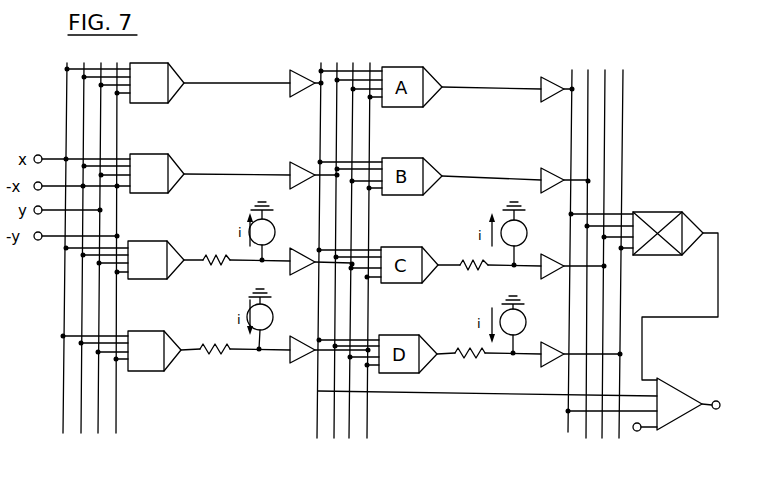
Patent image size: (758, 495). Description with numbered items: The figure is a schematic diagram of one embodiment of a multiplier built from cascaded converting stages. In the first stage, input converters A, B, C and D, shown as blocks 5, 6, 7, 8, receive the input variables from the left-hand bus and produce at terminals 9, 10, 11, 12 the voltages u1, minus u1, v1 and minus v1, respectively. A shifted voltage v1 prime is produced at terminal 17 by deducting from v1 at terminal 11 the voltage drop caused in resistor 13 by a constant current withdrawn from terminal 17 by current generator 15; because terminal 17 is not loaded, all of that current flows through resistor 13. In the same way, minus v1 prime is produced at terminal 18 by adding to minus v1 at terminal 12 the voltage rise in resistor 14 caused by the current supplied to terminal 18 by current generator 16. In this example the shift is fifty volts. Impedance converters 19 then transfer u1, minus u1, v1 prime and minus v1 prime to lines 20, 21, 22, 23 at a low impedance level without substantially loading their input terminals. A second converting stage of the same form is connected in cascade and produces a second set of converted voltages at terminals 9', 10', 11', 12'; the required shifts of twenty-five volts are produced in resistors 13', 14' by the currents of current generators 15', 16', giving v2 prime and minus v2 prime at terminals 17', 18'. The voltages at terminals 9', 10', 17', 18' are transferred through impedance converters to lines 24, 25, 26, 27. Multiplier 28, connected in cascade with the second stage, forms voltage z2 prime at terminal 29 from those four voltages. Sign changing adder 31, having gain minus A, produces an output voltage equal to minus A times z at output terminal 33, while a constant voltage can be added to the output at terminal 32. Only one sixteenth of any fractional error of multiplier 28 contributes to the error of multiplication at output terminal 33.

The input converter A 5 is at (170, 75).
The input converter B 6 is at (170, 166).
The input converter C 7 is at (169, 253).
The input converter D 8 is at (168, 342).
The terminal 9 is at (237, 72).
The terminal 10 is at (237, 164).
The terminal 11 is at (197, 247).
The terminal 12 is at (194, 332).
The resistor 13 is at (216, 269).
The resistor 14 is at (215, 358).
The current generator 15 is at (273, 231).
The current generator 16 is at (272, 319).
The terminal 17 is at (260, 269).
The terminal 18 is at (260, 358).
The impedance converters 19 is at (292, 76).
The line 20 is at (305, 250).
The line 21 is at (333, 440).
The line 22 is at (348, 440).
The line 23 is at (378, 250).
The terminal 9' is at (491, 77).
The terminal 10' is at (491, 167).
The terminal 11' is at (451, 253).
The terminal 12' is at (448, 336).
The resistor 13' is at (474, 275).
The resistor 14' is at (470, 362).
The current generator 15' is at (514, 233).
The current generator 16' is at (513, 324).
The terminal 17' is at (514, 277).
The terminal 18' is at (513, 363).
The line 24 is at (562, 256).
The line 25 is at (586, 440).
The line 26 is at (602, 440).
The line 27 is at (628, 262).
The multiplier 28 is at (656, 217).
The terminal 29 is at (691, 304).
The sign changing adder 31 is at (668, 397).
The terminal 32 is at (639, 432).
The output terminal 33 is at (714, 415).